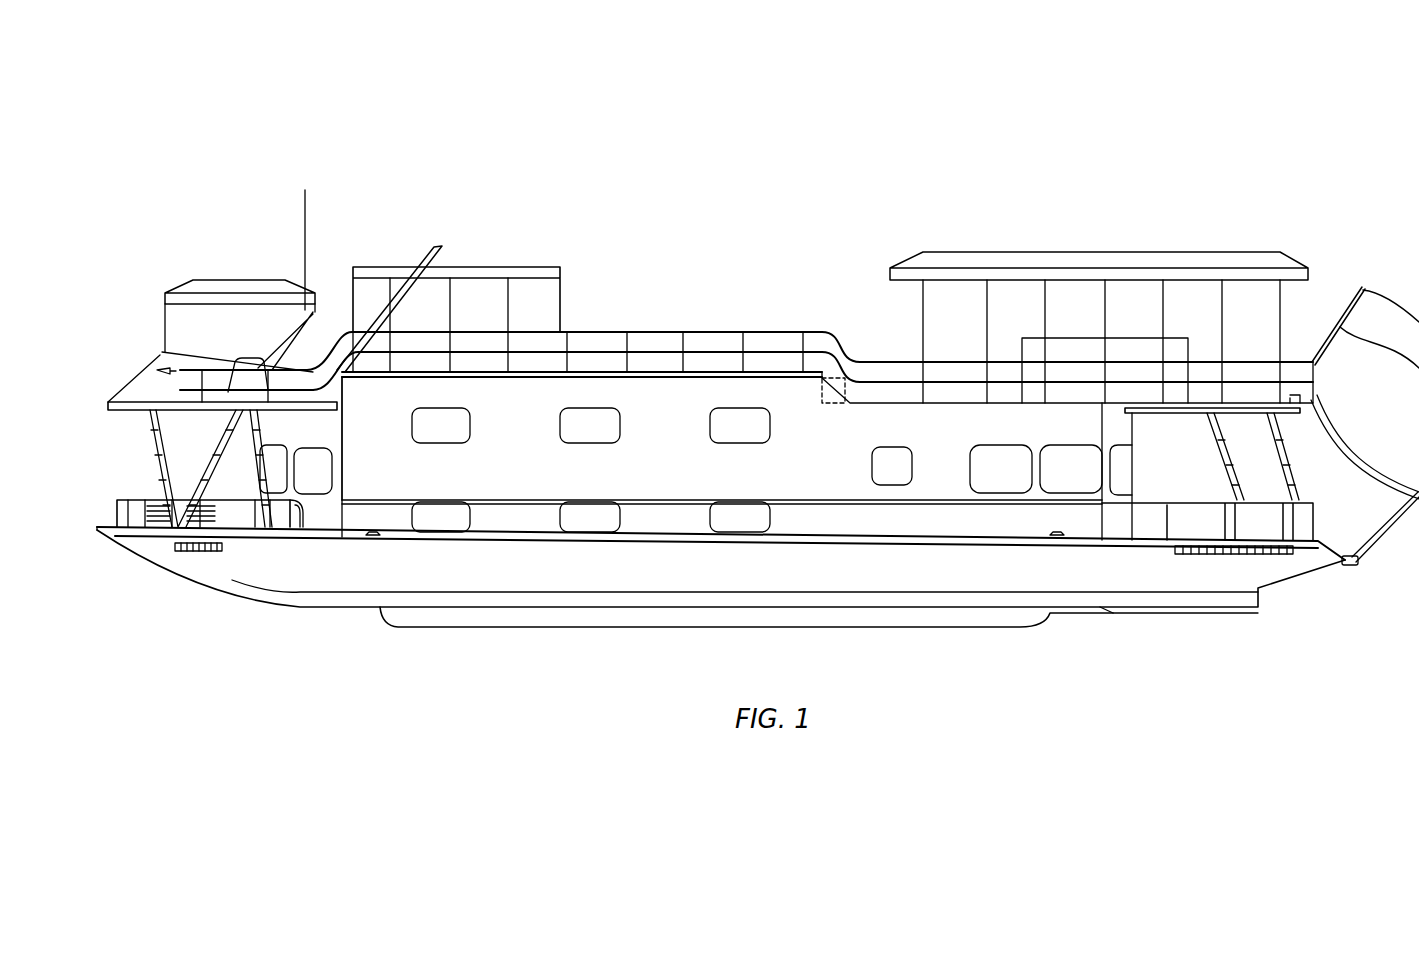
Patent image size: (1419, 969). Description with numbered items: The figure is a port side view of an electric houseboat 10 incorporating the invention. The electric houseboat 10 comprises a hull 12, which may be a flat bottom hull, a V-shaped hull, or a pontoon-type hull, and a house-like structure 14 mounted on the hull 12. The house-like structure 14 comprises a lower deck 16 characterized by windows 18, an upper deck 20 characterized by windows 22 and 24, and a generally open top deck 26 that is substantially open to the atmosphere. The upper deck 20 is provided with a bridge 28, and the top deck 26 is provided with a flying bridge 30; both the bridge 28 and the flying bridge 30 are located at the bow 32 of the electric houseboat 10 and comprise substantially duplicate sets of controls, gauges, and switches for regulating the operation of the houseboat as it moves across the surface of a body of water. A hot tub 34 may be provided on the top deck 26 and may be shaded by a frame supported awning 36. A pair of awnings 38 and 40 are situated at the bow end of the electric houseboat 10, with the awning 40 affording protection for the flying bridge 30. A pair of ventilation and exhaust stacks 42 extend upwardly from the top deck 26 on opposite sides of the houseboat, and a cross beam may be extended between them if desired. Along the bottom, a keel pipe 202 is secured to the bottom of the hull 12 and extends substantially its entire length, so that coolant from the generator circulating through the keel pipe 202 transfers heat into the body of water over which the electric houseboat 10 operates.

The electric houseboat 10 is at (268, 128).
The hull 12 is at (360, 573).
The house-like structure 14 is at (636, 395).
The lower deck 16 is at (667, 520).
The windows 18 is at (428, 508).
The upper deck 20 is at (666, 428).
The windows 22 is at (445, 432).
The windows 24 is at (872, 472).
The top deck 26 is at (595, 362).
The bridge 28 is at (330, 432).
The flying bridge 30 is at (216, 355).
The bow 32 is at (150, 565).
The hot tub 34 is at (1180, 338).
The frame supported awning 36 is at (1241, 250).
The awning 38 is at (494, 250).
The awning 40 is at (242, 278).
The ventilation and exhaust stacks 42 is at (408, 297).
The keel pipe 202 is at (476, 625).